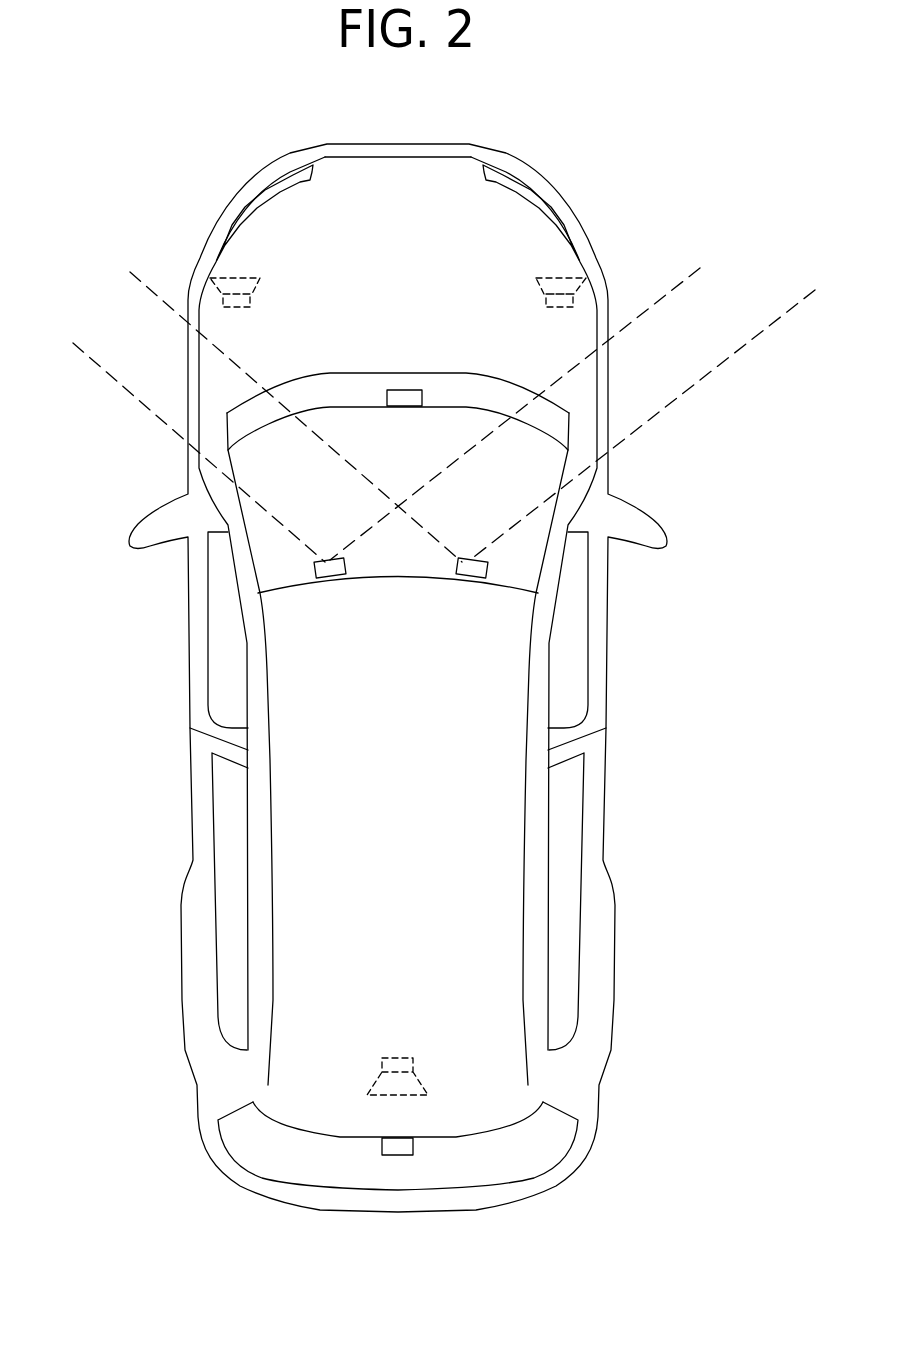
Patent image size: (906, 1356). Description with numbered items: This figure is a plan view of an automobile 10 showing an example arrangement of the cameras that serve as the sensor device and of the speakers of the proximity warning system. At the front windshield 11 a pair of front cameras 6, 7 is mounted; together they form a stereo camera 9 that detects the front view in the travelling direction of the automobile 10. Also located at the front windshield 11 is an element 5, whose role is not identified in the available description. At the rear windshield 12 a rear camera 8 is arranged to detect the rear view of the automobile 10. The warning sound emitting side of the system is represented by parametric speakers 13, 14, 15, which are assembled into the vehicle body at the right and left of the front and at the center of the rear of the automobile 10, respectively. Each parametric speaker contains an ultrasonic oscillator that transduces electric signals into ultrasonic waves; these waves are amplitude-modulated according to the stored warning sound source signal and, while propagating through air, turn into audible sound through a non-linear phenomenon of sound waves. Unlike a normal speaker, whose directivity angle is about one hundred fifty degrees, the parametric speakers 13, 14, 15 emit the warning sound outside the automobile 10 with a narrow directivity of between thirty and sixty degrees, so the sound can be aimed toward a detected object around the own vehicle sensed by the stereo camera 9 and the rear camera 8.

The front camera 5 is at (398, 390).
The front camera 6 is at (330, 577).
The front camera 7 is at (467, 577).
The rear camera 8 is at (398, 1155).
The stereo camera 9 is at (457, 635).
The automobile 10 is at (447, 144).
The front windshield 11 is at (460, 420).
The rear windshield 12 is at (483, 1172).
The parametric speaker 13 is at (217, 278).
The parametric speaker 14 is at (582, 278).
The parametric speaker 15 is at (400, 1058).